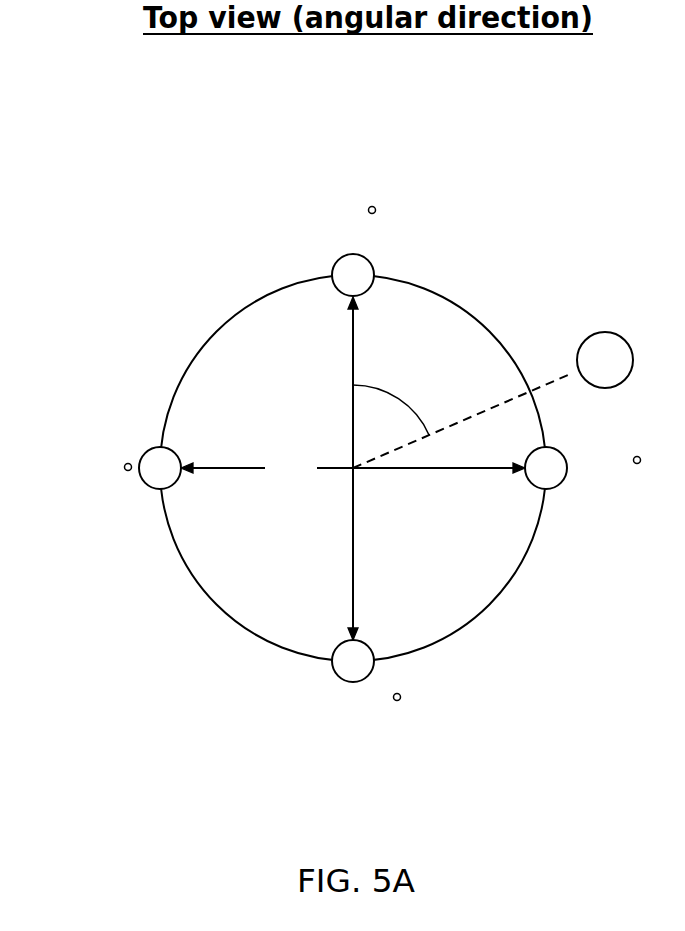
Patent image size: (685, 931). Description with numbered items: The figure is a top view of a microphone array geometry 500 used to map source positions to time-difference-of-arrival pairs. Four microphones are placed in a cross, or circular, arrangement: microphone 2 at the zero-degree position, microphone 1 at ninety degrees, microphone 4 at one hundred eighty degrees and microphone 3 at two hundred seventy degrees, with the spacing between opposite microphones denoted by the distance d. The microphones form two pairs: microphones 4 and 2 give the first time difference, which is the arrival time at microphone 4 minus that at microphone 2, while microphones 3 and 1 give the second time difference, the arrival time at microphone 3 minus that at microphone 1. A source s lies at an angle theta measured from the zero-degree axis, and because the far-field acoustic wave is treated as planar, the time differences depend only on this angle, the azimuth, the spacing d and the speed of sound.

The microphone array geometry 500 is at (123, 147).
The microphone 1 is at (546, 468).
The microphone 2 is at (353, 275).
The microphone 3 is at (160, 468).
The microphone 4 is at (353, 661).